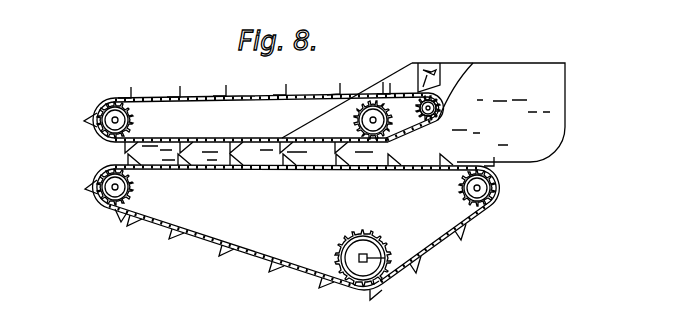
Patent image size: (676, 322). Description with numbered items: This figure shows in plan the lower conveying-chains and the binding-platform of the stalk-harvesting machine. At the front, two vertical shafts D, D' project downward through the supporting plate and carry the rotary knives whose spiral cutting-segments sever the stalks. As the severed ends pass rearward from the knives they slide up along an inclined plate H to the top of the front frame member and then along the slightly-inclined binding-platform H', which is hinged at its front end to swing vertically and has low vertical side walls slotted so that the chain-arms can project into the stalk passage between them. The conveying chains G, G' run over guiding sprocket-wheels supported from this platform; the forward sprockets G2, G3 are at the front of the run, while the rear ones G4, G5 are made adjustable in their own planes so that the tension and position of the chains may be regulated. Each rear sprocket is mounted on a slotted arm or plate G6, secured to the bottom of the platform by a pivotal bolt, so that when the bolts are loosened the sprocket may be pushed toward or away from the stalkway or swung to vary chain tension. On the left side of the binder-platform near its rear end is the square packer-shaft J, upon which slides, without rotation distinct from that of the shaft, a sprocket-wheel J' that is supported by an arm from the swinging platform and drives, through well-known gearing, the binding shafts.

The upper conveyor belt G is at (271, 85).
The lower conveyor belt G' is at (231, 246).
The upper left sprocket G2 is at (96, 109).
The lower left sprocket G3 is at (117, 200).
The rear guiding sprocket-wheel G4 is at (419, 63).
The rear guiding sprocket-wheel G5 is at (500, 190).
The arm or plate G6 is at (441, 63).
The vertical shaft D is at (240, 123).
The vertical shaft D' is at (268, 181).
The inclined plate H is at (257, 155).
The binding-platform H' is at (488, 112).
The packer-shaft J is at (367, 258).
The sprocket-wheel J' is at (369, 243).